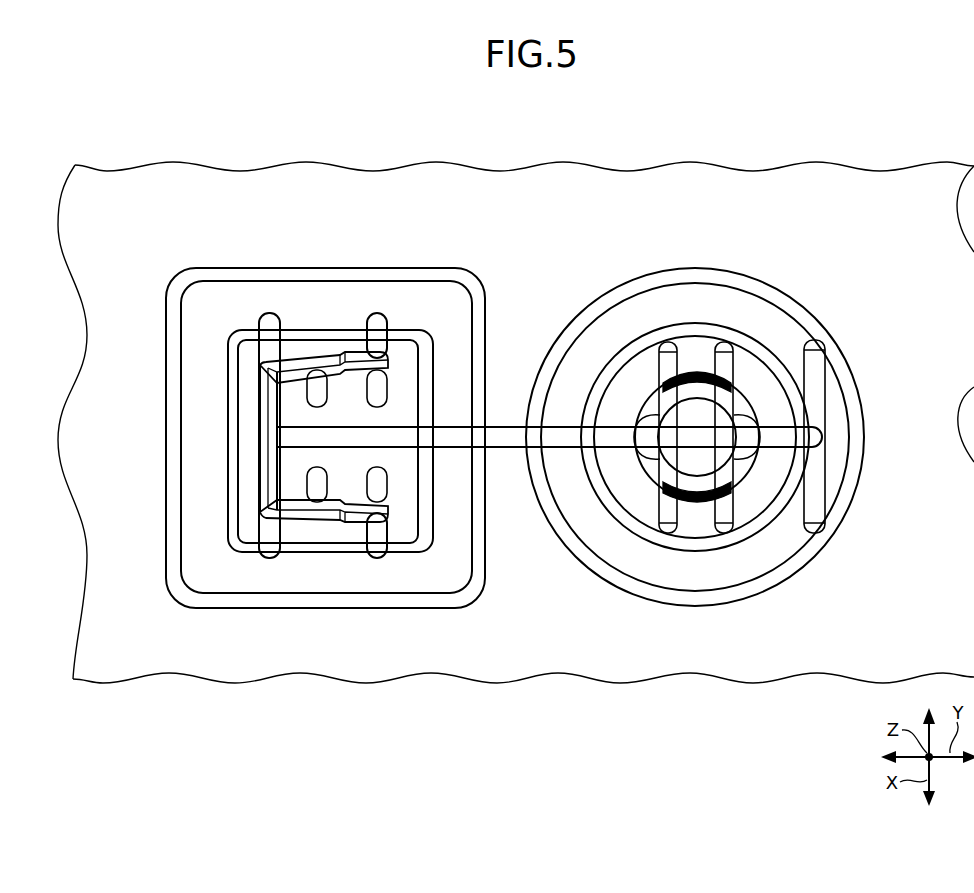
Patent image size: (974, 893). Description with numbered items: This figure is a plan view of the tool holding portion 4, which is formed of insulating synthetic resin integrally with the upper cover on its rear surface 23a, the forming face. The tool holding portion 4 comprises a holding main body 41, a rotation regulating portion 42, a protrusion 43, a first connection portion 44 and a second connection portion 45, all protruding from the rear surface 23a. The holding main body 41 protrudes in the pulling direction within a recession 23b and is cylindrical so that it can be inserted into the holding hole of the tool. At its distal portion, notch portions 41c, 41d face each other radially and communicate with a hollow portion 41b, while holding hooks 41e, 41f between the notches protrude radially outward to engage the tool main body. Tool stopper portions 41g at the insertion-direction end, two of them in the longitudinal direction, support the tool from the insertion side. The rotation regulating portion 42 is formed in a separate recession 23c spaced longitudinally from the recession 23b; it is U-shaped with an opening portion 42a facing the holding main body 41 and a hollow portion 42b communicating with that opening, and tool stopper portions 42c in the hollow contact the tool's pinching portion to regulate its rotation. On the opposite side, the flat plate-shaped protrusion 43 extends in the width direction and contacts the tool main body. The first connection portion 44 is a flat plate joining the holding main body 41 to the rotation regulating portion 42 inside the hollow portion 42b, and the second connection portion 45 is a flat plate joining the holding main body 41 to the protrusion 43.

The tool holding portion 4 is at (298, 414).
The rear surface 23a is at (700, 185).
The recession 23b is at (777, 317).
The recession 23c is at (410, 293).
The holding main body 41 is at (683, 438).
The hollow portion 41b is at (712, 437).
The notch portion 41c is at (742, 442).
The notch portion 41d is at (648, 435).
The holding hook 41e is at (687, 497).
The holding hook 41f is at (688, 377).
The tool stopper portion 41g is at (667, 345).
The rotation regulating portion 42 is at (249, 374).
The opening portion 42a is at (392, 415).
The hollow portion 42b is at (347, 387).
The tool stopper portion 42c is at (315, 392).
The protrusion 43 is at (837, 392).
The first connection portion 44 is at (562, 369).
The second connection portion 45 is at (780, 416).